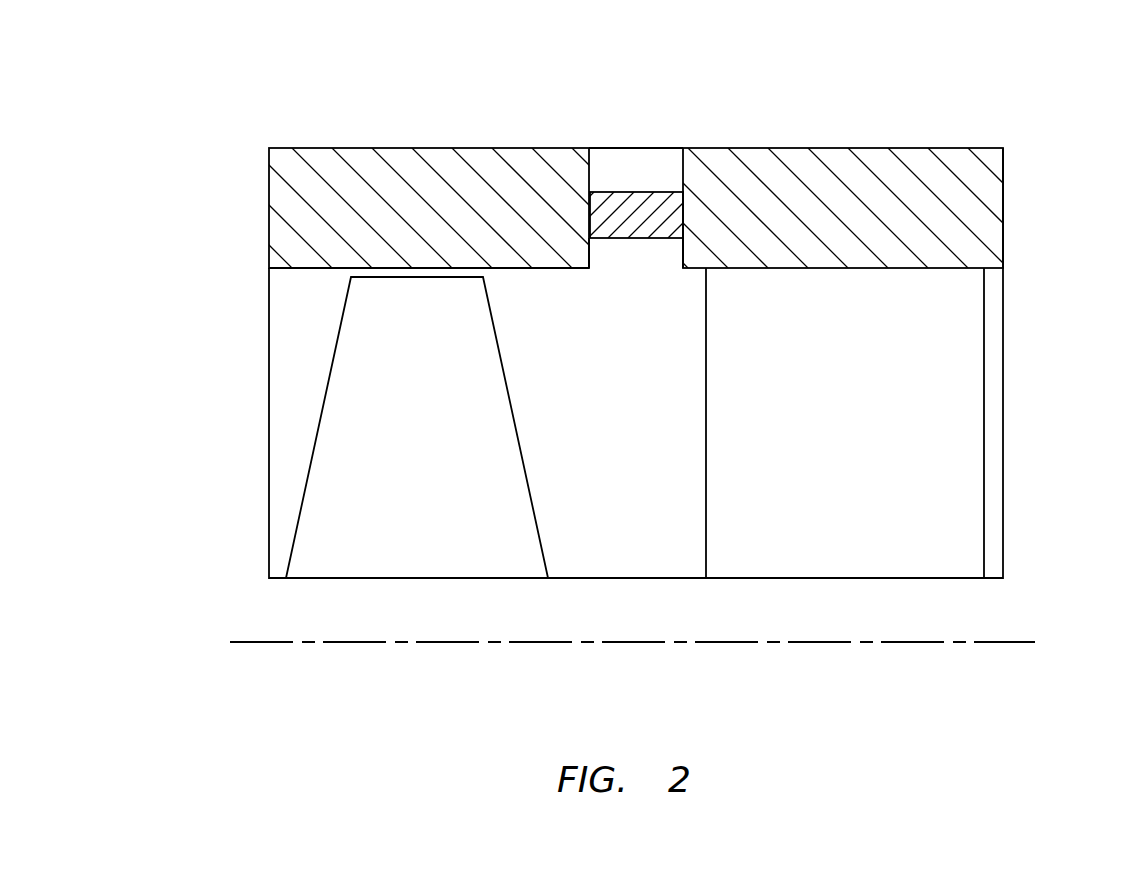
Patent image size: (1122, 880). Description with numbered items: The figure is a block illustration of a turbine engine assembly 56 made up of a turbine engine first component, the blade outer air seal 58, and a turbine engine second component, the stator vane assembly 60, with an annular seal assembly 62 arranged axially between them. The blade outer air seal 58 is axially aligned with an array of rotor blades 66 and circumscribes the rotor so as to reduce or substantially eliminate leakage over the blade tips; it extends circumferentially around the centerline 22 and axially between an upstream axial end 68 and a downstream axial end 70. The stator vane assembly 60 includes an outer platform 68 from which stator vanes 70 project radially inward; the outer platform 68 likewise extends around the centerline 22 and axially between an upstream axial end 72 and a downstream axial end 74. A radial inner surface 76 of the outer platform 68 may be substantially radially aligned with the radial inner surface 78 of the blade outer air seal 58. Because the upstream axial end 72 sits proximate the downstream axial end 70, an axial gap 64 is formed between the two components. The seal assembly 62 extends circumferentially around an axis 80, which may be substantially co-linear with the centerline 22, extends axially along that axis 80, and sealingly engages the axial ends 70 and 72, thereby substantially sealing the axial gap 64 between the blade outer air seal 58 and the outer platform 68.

The turbine engine assembly 56 is at (953, 111).
The blade outer air seal 58 is at (278, 192).
The stator vane assembly 60 is at (1004, 162).
The annular seal assembly 62 is at (620, 200).
The axial gap 64 is at (648, 181).
The rotor blades 66 is at (313, 443).
The outer platform 68 is at (280, 232).
The downstream axial end 70 is at (590, 253).
The upstream axial end 72 is at (683, 257).
The downstream axial end 74 is at (1005, 253).
The radial inner surface 76 is at (753, 270).
The radial inner surface 78 is at (513, 272).
The centerline 22 is at (660, 684).
The axis 80 is at (995, 642).